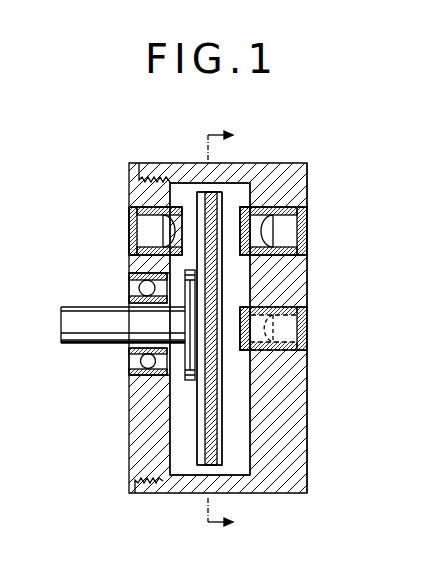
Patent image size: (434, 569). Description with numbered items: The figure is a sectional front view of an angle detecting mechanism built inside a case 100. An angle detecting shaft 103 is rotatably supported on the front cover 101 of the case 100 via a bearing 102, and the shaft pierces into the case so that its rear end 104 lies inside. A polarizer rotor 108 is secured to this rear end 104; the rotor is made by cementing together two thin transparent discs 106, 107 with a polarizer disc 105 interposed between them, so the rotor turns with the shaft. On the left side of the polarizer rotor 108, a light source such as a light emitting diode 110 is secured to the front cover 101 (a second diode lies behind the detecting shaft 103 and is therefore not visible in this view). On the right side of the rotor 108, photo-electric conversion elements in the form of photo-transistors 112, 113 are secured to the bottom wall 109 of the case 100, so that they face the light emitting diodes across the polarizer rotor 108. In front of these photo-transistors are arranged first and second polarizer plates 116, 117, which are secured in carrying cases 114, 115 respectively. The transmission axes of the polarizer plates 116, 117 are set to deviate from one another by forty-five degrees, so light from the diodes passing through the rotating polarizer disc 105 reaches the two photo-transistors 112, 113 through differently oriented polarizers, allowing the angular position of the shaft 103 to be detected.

The case 100 is at (148, 162).
The front cover 101 is at (134, 195).
The bearing 102 is at (140, 293).
The angle detecting shaft 103 is at (85, 312).
The rear end 104 is at (165, 375).
The polarizer disc 105 is at (217, 406).
The thin transparent disc 106 is at (198, 437).
The thin transparent disc 107 is at (220, 448).
The polarizer rotor 108 is at (226, 374).
The bottom wall 109 is at (277, 175).
The light emitting diode 110 is at (140, 230).
The photo-transistor 112 is at (287, 232).
The photo-transistor 113 is at (290, 330).
The carrying case 114 is at (291, 193).
The carrying case 115 is at (315, 303).
The first polarizer plate 116 is at (206, 190).
The second polarizer plate 117 is at (302, 292).